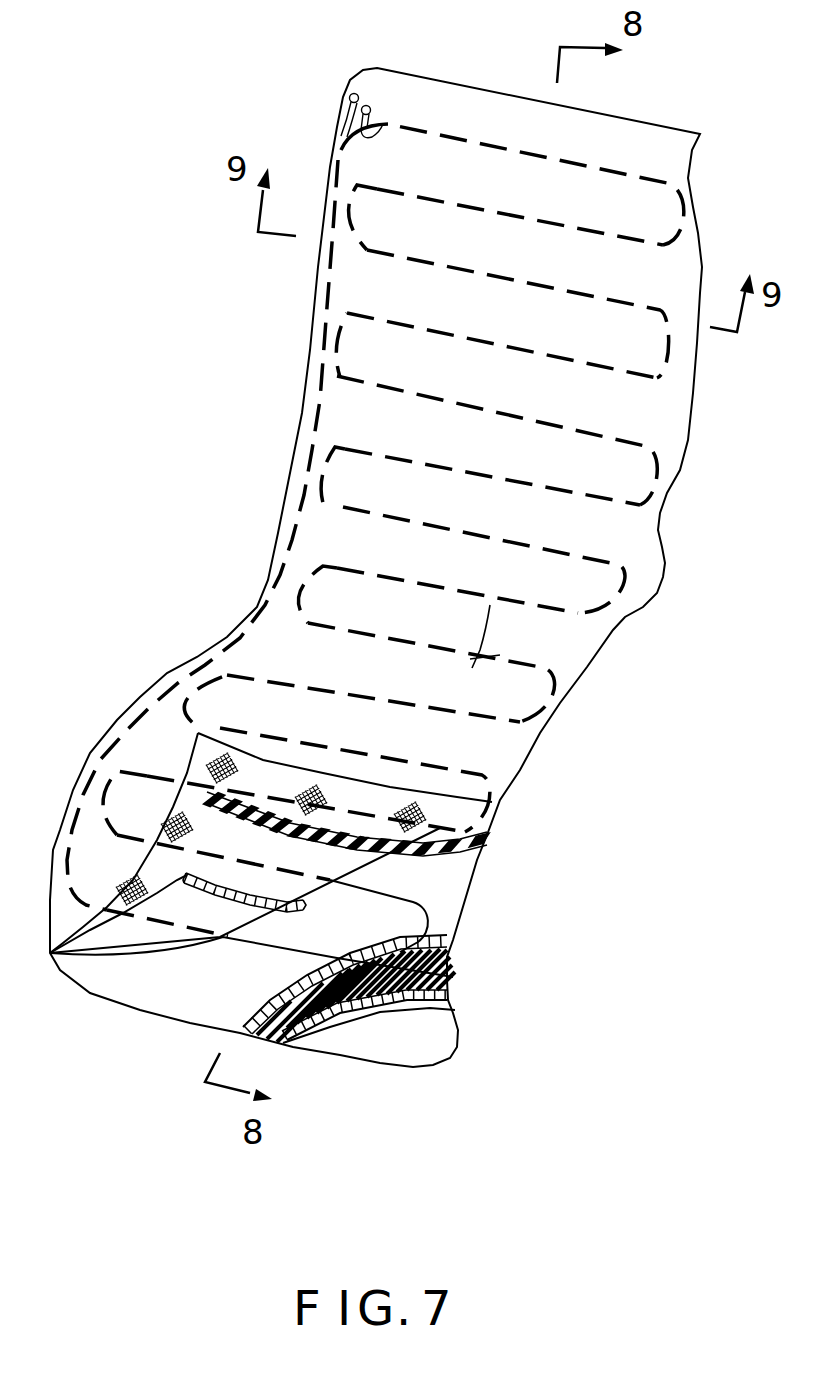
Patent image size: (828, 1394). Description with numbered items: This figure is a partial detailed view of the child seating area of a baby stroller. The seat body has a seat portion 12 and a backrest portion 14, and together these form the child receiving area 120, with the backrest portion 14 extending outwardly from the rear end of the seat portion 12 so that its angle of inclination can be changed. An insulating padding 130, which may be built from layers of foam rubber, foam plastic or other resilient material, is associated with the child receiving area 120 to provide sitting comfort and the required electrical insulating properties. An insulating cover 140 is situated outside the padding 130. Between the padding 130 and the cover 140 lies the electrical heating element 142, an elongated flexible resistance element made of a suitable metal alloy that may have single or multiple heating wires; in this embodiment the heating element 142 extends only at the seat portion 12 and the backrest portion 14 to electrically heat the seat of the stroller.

The seat cushion 12 is at (477, 757).
The seat back 14 is at (350, 283).
The child receiving area 120 is at (334, 413).
The insulating padding 130 is at (290, 1040).
The insulating cover 140 is at (190, 753).
The electrical heating element 142 is at (420, 905).